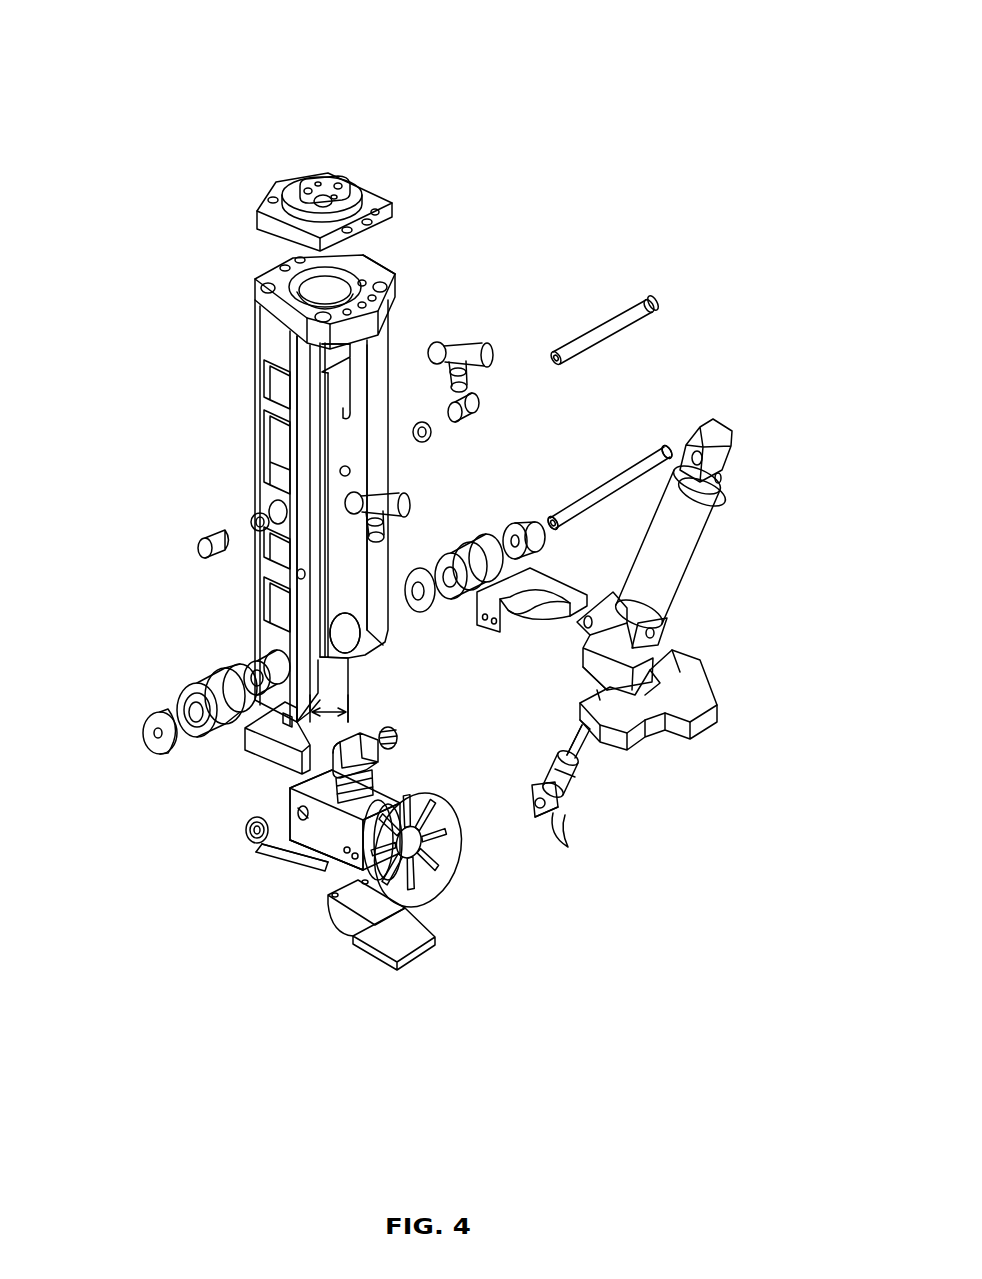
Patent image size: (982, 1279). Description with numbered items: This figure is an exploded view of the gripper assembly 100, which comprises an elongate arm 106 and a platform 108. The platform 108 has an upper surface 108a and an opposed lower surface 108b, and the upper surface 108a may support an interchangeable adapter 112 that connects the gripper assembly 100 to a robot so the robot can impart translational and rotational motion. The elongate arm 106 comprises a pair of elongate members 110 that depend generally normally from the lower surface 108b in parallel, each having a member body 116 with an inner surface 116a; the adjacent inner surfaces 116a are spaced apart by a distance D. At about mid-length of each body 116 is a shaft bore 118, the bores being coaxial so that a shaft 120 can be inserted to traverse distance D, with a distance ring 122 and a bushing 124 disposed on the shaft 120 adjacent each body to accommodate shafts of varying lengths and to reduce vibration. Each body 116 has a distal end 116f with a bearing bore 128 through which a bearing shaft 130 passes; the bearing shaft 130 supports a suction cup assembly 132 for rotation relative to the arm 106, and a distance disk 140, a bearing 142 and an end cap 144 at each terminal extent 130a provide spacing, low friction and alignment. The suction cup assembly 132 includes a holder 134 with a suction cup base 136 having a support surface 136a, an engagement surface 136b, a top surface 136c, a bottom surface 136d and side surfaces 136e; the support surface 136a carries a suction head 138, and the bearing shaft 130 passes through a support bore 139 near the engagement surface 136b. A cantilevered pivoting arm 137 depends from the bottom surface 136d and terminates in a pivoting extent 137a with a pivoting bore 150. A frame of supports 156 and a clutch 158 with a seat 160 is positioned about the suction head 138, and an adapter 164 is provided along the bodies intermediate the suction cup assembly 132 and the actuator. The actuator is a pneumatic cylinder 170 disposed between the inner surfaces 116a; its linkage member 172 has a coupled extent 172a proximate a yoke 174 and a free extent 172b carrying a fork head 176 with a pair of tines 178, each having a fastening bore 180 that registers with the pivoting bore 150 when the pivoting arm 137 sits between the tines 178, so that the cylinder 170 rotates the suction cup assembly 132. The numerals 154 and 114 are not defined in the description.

The gripper assembly 100 is at (453, 83).
The interchangeable adapter 112 is at (338, 192).
The platform 108 is at (383, 268).
The upper surface 108a is at (378, 268).
The lower surface 108b is at (302, 358).
The elongate arm 106 is at (260, 352).
The elongate member 110 is at (297, 417).
The member body 116 is at (386, 346).
The inner surface 116a is at (343, 575).
The distal end 116f is at (387, 635).
The shaft bore 118 is at (352, 468).
The shaft 120 is at (625, 315).
The distance ring 122 is at (255, 516).
The bushing 124 is at (203, 543).
The bearing bore 128 is at (345, 642).
The bearing shaft 130 is at (598, 493).
The terminal extent 130a is at (665, 450).
The suction cup assembly 132 is at (447, 897).
The holder 134 is at (325, 883).
The suction cup base 136 is at (322, 890).
The support surface 136a is at (380, 807).
The engagement surface 136b is at (292, 793).
The top surface 136c is at (383, 782).
The bottom surface 136d is at (335, 877).
The side surfaces 136e is at (265, 845).
The pivoting arm 137 is at (256, 850).
The pivoting extent 137a is at (250, 836).
The suction head 138 is at (455, 850).
The support bore 139 is at (258, 815).
The distance disk 140 is at (247, 680).
The bearing 142 is at (180, 697).
The end cap 144 is at (147, 722).
The pivoting bore 150 is at (262, 852).
The bracket 154 is at (531, 582).
The supports 156 is at (248, 725).
The clutch 158 is at (380, 945).
The seat 160 is at (420, 970).
The adapter 164 is at (708, 700).
The pneumatic cylinder 170 is at (695, 540).
The linkage member 172 is at (590, 738).
The coupled extent 172a is at (592, 672).
The free extent 172b is at (560, 748).
The yoke 174 is at (582, 634).
The fork head 176 is at (580, 781).
The knob 114 is at (572, 813).
The tines 178 is at (566, 840).
The fastening bore 180 is at (550, 826).
The distance D is at (329, 704).